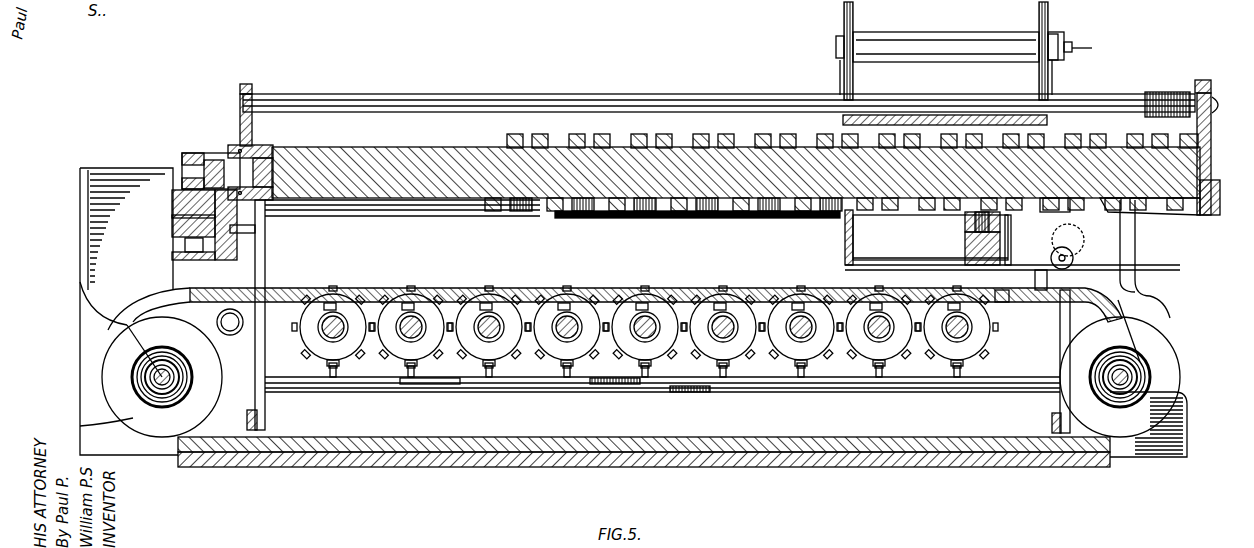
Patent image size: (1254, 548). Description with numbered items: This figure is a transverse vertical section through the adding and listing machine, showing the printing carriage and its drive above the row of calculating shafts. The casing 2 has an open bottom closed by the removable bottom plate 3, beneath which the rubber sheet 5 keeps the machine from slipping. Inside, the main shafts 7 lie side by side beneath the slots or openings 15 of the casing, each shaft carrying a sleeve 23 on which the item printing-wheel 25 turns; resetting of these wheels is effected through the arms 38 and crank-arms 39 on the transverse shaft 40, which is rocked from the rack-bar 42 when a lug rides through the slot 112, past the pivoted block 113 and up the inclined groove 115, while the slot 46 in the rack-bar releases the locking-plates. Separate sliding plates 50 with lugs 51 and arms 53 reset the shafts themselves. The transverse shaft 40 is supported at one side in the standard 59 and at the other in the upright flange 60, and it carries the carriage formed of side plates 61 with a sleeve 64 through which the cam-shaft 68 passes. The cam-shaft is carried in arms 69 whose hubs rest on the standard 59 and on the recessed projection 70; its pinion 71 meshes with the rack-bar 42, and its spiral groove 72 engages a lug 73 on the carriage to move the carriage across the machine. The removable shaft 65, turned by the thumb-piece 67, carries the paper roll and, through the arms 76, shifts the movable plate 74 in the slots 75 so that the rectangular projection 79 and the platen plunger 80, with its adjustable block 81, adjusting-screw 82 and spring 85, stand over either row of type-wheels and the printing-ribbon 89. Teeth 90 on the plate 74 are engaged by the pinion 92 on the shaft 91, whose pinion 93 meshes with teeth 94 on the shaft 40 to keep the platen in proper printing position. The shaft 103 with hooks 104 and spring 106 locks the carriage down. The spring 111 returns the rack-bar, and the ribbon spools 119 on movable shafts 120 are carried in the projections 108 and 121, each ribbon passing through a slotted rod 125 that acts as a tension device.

The casing 2 is at (684, 288).
The bottom plate 3 is at (480, 455).
The rubber sheet 5 is at (600, 467).
The main shaft 7 is at (336, 322).
The slot or opening 15 is at (326, 294).
The sleeve 23 is at (348, 343).
The type or printing wheel 25 is at (395, 352).
The arm 38 is at (247, 422).
The crank-arm 39 is at (265, 256).
The transverse shaft 40 is at (457, 216).
The rack-bar 42 is at (183, 245).
The slot 46 is at (190, 258).
The sliding plate 50 is at (480, 378).
The lug or projection 51 is at (520, 360).
The arm 53 is at (610, 384).
The standard or bracket 59 is at (1212, 215).
The upright flange 60 is at (240, 230).
The side plate 61 is at (852, 78).
The sleeve 64 is at (935, 115).
The removable shaft 65 is at (935, 32).
The thumb-piece 67 is at (1075, 45).
The cam-shaft 68 is at (752, 140).
The arm 69 is at (240, 112).
The projection 70 is at (227, 152).
The pinion 71 is at (192, 153).
The spiral groove 72 is at (690, 137).
The lug 73 is at (1050, 198).
The movable plate 74 is at (1172, 270).
The slot 75 is at (847, 236).
The arm 76 is at (808, 233).
The rectangular projection 79 is at (1012, 248).
The platen block or plunger 80 is at (965, 225).
The adjustable block 81 is at (1004, 302).
The adjusting-screw 82 is at (965, 245).
The spring 85 is at (930, 237).
The printing-ribbon 89 is at (178, 308).
The teeth 90 is at (1150, 265).
The shaft 91 is at (1043, 292).
The pinion 92 is at (1068, 240).
The pinion 93 is at (1073, 256).
The teeth 94 is at (762, 218).
The shaft 103 is at (547, 96).
The hook 104 is at (243, 84).
The spring 106 is at (1163, 92).
The projection 108 is at (98, 168).
The spring 111 is at (231, 335).
The slot 112 is at (228, 260).
The pivoted block 113 is at (185, 222).
The inclined groove 115 is at (175, 200).
The spool 119 is at (108, 360).
The movable shaft 120 is at (162, 388).
The projection 121 is at (1145, 457).
The slotted rod 125 is at (1135, 310).